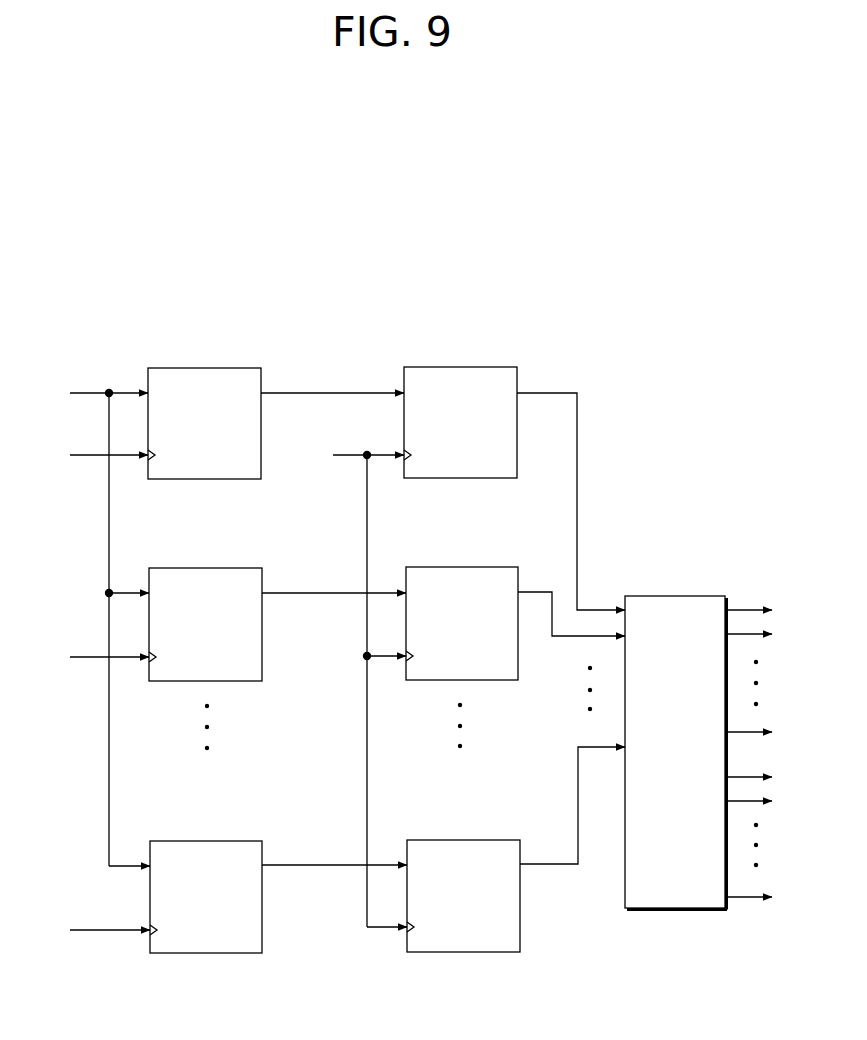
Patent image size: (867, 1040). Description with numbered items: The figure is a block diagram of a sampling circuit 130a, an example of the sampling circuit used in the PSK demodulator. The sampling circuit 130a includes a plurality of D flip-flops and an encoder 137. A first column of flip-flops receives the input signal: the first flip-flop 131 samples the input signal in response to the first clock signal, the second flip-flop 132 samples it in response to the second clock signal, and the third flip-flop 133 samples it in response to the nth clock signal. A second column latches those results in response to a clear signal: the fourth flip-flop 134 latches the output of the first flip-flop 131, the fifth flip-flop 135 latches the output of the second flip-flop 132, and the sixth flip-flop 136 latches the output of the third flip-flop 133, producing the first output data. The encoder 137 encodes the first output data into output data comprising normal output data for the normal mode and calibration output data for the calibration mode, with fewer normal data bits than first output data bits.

The sampling circuit 130a is at (316, 258).
The first flip-flop 131 is at (207, 368).
The second flip-flop 132 is at (207, 568).
The third flip-flop 133 is at (207, 841).
The fourth flip-flop 134 is at (462, 367).
The fifth flip-flop 135 is at (463, 567).
The sixth flip-flop 136 is at (463, 840).
The encoder 137 is at (700, 596).